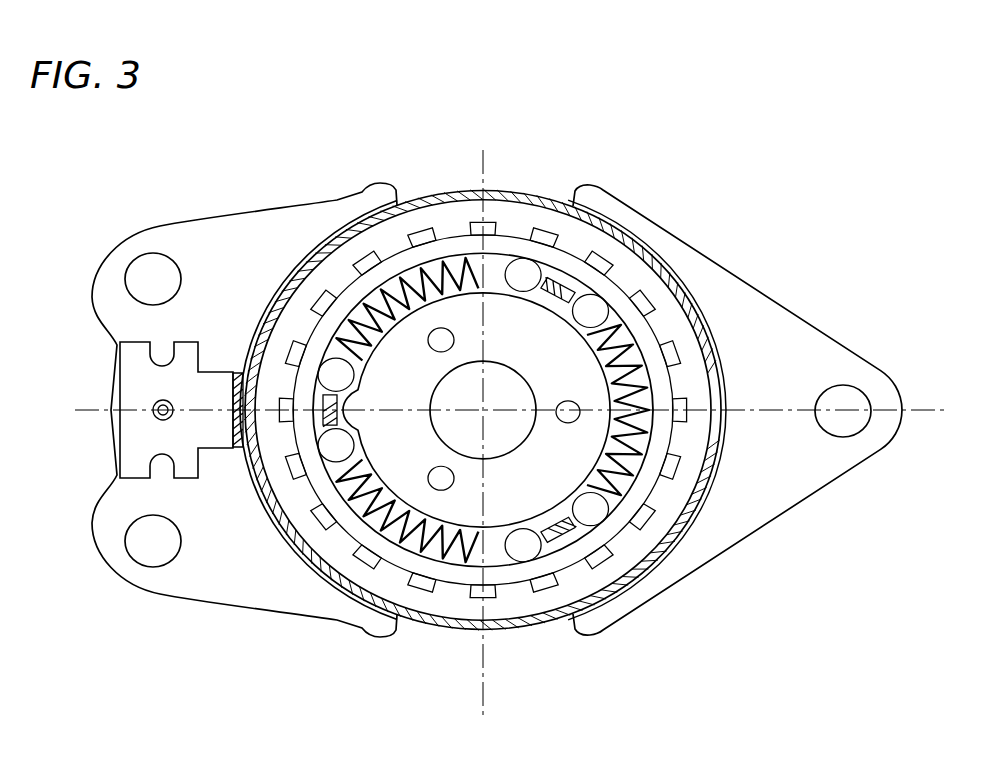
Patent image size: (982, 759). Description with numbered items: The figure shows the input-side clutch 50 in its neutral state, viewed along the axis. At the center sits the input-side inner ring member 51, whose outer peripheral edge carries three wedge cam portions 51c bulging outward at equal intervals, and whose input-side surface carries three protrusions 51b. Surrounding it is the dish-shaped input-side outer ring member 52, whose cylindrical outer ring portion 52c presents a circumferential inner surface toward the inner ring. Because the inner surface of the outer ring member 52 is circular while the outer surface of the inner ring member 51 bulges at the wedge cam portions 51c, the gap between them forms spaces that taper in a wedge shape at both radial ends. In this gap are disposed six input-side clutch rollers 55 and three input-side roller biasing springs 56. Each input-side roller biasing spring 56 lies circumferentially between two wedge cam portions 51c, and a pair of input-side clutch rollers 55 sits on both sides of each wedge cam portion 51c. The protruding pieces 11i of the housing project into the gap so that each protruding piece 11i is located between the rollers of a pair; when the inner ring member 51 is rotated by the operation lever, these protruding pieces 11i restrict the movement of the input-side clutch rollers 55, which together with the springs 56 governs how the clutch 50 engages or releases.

The input-side clutch 50 is at (345, 222).
The input-side inner ring member 51 is at (575, 360).
The protrusions 51b is at (487, 288).
The wedge cam portions 51c is at (560, 300).
The input-side outer ring member 52 is at (667, 345).
The outer ring portion 52c is at (541, 592).
The input-side clutch rollers 55 is at (328, 455).
The input-side roller biasing springs 56 is at (483, 293).
The protruding pieces 11i is at (575, 545).